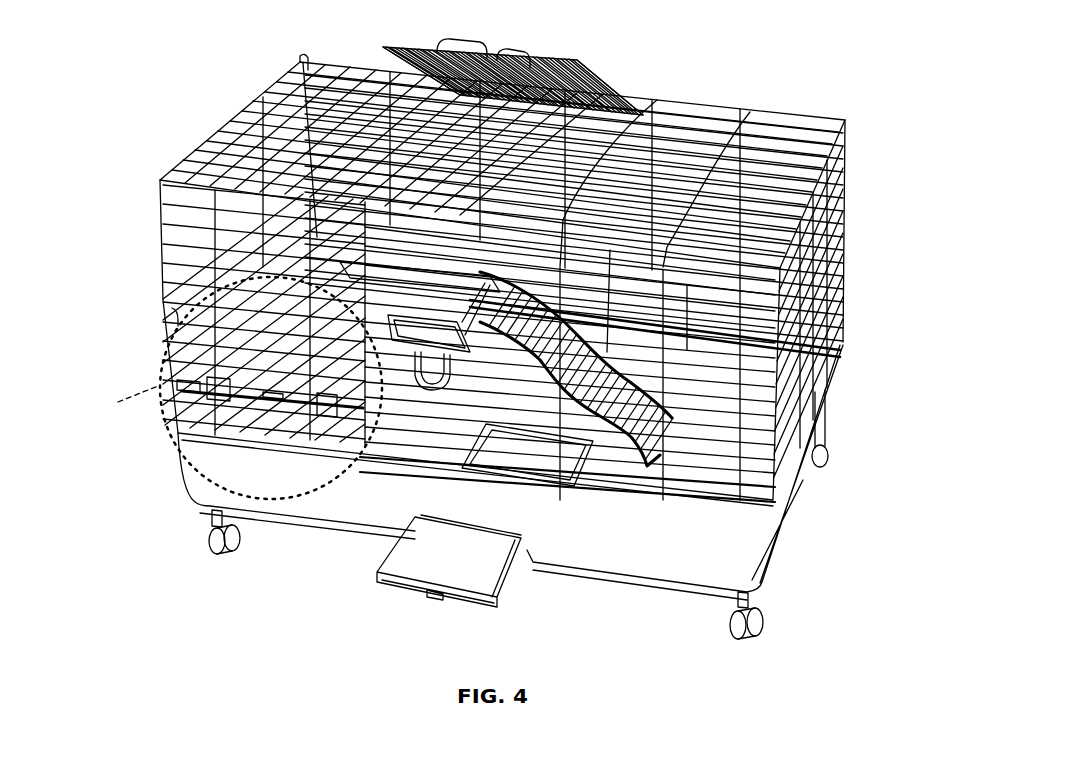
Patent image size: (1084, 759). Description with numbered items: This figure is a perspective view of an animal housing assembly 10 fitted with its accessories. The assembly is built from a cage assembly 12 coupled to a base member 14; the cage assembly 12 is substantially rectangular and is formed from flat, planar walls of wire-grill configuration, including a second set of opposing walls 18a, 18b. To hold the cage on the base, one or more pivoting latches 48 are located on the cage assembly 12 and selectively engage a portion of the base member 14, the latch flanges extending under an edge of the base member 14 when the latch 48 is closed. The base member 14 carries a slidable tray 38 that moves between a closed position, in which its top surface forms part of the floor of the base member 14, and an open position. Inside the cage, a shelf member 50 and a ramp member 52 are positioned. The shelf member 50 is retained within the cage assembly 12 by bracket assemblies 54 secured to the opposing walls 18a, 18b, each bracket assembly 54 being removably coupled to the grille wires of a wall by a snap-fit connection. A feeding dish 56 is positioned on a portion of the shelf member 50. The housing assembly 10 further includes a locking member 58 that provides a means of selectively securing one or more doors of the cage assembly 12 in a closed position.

The animal housing assembly 10 is at (136, 112).
The cage assembly 12 is at (851, 170).
The base member 14 is at (806, 533).
The second set of opposing walls (first wall) 18a is at (183, 240).
The second set of opposing walls (second wall) 18b is at (373, 115).
The slidable tray 38 is at (396, 590).
The pivoting latch 48 is at (822, 432).
The shelf member 50 is at (297, 125).
The ramp member 52 is at (658, 100).
The bracket assembly 54 is at (216, 400).
The feeding dish 56 is at (176, 316).
The locking member 58 is at (418, 360).